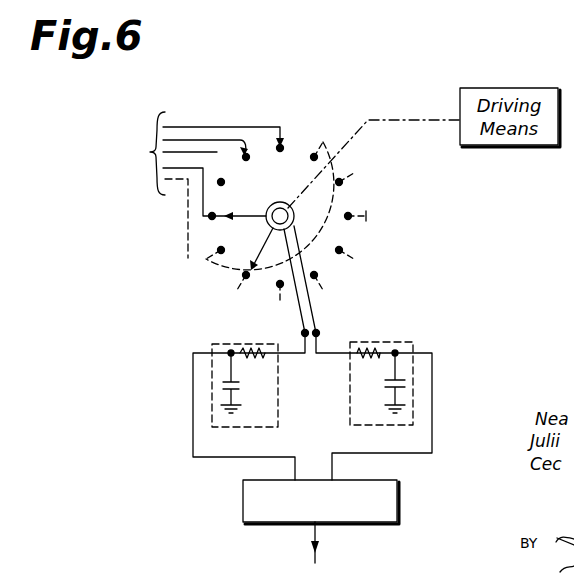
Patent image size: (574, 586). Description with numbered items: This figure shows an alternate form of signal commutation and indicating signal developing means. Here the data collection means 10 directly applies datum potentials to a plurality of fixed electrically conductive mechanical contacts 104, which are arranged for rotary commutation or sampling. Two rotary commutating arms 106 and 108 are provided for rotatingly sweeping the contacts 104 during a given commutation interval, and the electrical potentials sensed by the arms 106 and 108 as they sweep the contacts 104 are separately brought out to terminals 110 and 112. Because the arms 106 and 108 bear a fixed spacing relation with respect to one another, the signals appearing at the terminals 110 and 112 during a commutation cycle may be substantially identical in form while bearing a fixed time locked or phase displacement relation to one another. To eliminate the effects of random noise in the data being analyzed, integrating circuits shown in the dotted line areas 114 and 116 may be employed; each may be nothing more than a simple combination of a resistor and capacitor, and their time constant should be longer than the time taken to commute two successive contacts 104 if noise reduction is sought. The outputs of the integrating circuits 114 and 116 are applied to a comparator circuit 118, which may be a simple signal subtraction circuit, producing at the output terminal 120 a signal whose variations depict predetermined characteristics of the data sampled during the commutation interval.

The data collection means 10 is at (151, 185).
The fixed electrically conductive mechanical contacts 104 is at (221, 181).
The rotary commutating arm 106 is at (266, 214).
The rotary commutating arm 108 is at (252, 253).
The terminal 110 is at (317, 334).
The terminal 112 is at (304, 333).
The integrating circuit 114 is at (436, 331).
The integrating circuit 116 is at (216, 326).
The comparator circuit 118 is at (397, 509).
The output terminal 120 is at (317, 537).